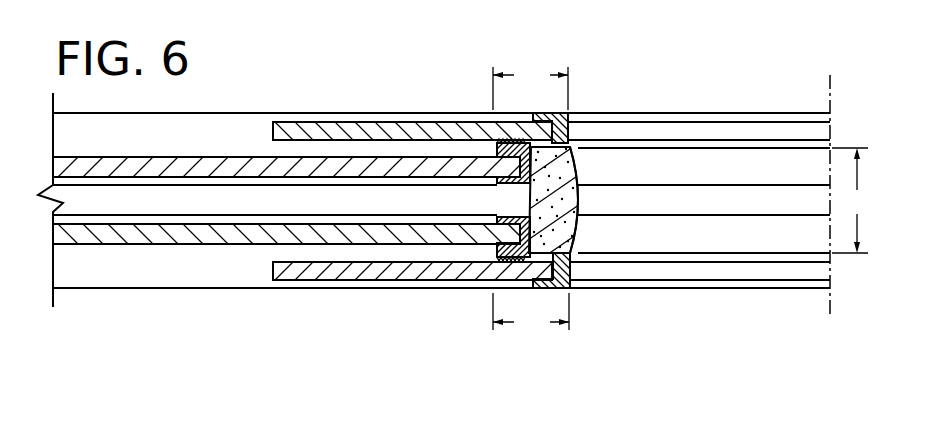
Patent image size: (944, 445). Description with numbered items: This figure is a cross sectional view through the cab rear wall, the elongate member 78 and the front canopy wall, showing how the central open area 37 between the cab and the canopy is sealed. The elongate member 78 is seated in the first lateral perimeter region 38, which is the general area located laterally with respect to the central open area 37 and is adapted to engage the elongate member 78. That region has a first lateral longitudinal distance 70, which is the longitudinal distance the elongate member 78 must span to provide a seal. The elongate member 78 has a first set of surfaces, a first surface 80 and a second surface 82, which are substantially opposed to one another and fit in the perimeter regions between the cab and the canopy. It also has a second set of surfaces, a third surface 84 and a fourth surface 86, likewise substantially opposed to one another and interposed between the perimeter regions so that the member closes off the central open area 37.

The central open area 37 is at (773, 212).
The first lateral perimeter region 38 is at (531, 199).
The first lateral longitudinal distance 70 is at (852, 200).
The elongate member 78 is at (578, 176).
The first surface 80 is at (556, 284).
The second surface 82 is at (552, 134).
The third surface 84 is at (580, 197).
The fourth surface 86 is at (527, 205).